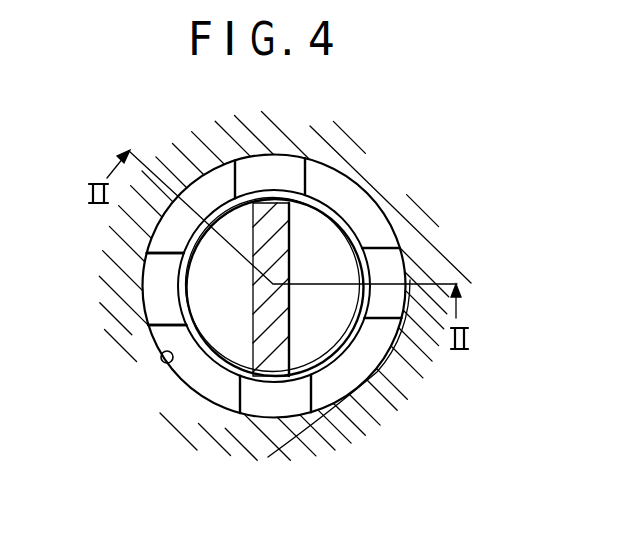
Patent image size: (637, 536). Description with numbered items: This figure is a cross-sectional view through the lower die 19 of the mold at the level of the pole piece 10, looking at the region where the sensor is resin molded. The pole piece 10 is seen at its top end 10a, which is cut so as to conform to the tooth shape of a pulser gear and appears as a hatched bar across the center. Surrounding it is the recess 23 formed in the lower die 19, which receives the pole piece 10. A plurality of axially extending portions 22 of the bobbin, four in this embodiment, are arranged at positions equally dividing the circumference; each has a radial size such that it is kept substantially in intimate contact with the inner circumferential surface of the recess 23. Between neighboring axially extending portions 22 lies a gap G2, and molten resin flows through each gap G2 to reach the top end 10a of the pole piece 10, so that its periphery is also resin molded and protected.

The lower die 19 is at (283, 133).
The axially extending portions 22 is at (202, 192).
The pole piece 10 is at (343, 265).
The top end 10a is at (287, 320).
The gap G2 is at (160, 280).
The recess 23 is at (161, 365).